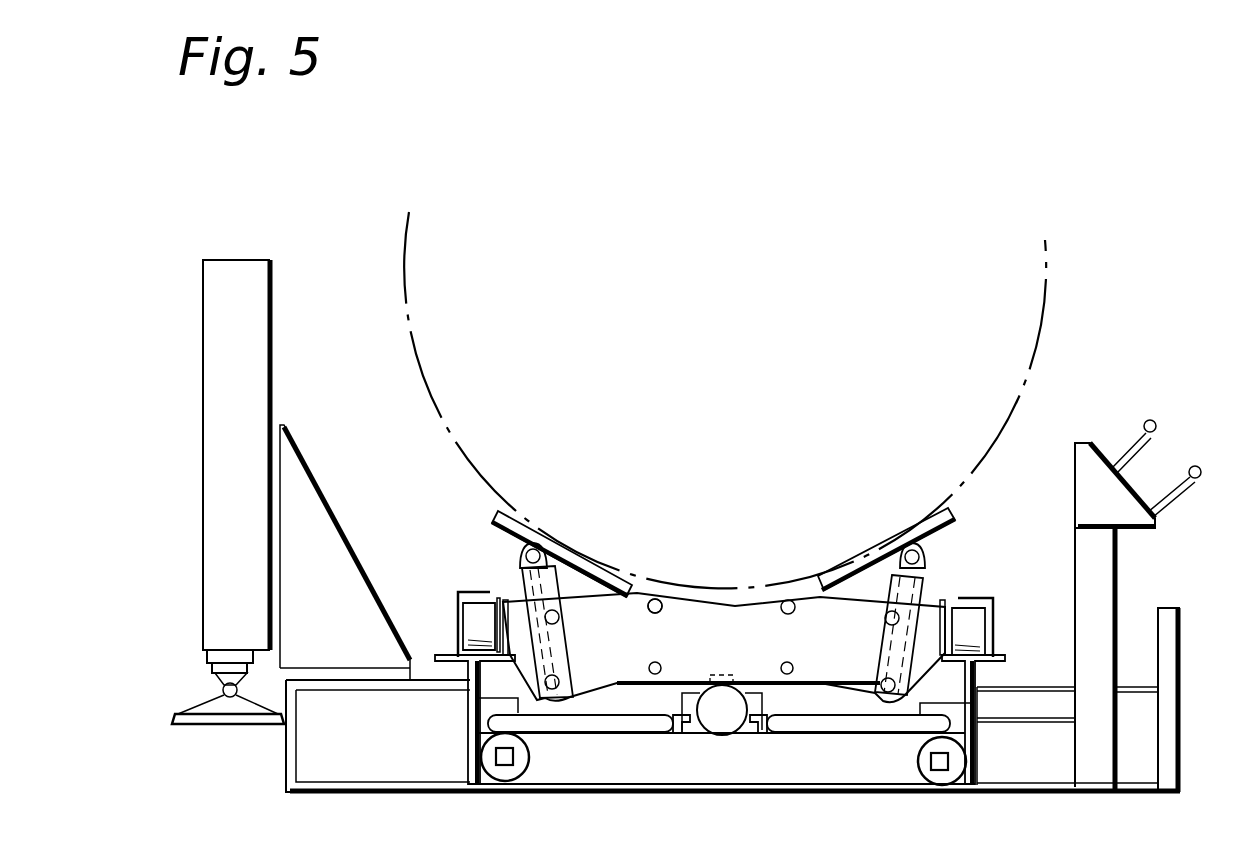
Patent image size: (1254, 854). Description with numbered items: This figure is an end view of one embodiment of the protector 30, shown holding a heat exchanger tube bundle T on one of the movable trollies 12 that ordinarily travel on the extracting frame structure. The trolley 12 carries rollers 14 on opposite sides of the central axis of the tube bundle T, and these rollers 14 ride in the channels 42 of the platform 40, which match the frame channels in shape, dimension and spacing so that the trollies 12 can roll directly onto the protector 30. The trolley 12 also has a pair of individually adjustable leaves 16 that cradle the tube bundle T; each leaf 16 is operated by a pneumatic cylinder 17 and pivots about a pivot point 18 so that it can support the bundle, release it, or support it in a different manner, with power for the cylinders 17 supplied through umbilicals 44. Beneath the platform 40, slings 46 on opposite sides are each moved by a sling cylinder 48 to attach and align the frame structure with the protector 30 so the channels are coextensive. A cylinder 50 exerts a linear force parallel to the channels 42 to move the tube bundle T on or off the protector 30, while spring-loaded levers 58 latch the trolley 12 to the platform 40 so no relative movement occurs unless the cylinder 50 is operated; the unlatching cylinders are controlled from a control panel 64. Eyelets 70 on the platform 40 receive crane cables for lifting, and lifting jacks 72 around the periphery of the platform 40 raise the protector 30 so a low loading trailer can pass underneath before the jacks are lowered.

The heat exchanger tube bundle T is at (1052, 263).
The movable trolley 12 is at (850, 680).
The roller 14 is at (470, 612).
The adjustable leaf 16 is at (494, 516).
The pneumatic cylinder 17 is at (528, 582).
The pivot point 18 is at (650, 612).
The protector 30 is at (1238, 372).
The platform 40 is at (492, 790).
The channel 42 is at (460, 604).
The umbilical 44 is at (663, 724).
The sling 46 is at (490, 756).
The sling cylinder 48 is at (516, 753).
The cylinder 50 is at (728, 720).
The lever 58 is at (746, 682).
The control panel 64 is at (1083, 457).
The eyelet 70 is at (1170, 618).
The lifting jack 72 is at (192, 410).